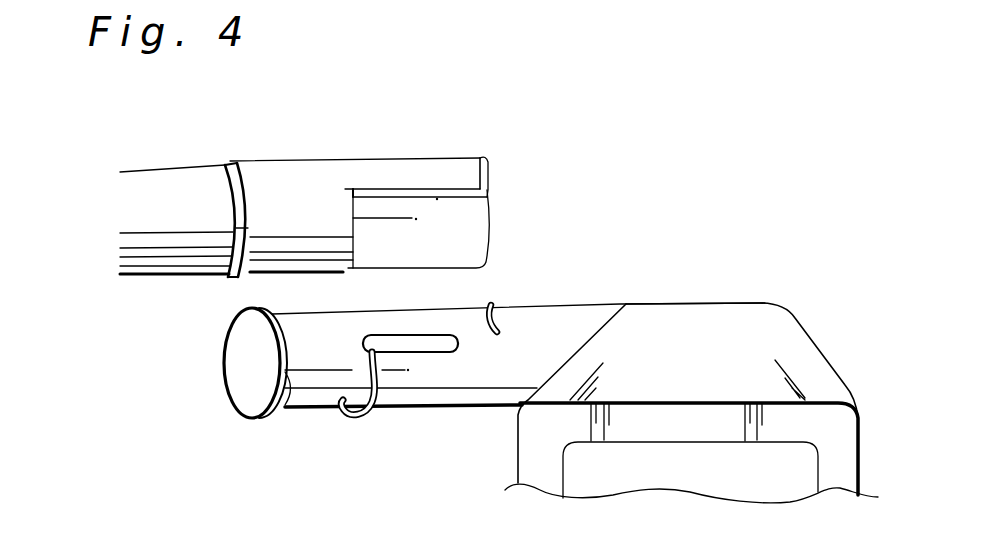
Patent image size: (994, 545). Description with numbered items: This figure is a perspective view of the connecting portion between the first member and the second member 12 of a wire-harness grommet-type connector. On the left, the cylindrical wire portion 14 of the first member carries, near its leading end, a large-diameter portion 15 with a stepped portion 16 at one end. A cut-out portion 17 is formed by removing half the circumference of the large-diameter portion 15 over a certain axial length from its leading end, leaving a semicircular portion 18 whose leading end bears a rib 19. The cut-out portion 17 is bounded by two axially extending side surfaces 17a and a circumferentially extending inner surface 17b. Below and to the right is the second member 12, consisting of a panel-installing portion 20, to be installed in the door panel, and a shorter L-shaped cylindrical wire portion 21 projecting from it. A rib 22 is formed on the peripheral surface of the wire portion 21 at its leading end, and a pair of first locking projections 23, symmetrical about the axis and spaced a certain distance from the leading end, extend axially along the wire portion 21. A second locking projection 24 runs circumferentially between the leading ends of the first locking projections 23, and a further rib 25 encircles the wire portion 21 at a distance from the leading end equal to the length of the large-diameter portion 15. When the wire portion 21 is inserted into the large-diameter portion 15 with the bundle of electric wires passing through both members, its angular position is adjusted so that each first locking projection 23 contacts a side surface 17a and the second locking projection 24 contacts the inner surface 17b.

The second member 12 is at (661, 302).
The wire portion 14 is at (152, 284).
The large-diameter portion 15 is at (297, 196).
The stepped portion 16 is at (238, 231).
The cut-out portion 17 is at (430, 266).
The side surfaces 17a is at (381, 190).
The inner surface 17b is at (353, 233).
The semicircular portion 18 is at (428, 180).
The rib 19 is at (493, 165).
The panel-installing portion 20 is at (690, 377).
The wire portion 21 is at (552, 333).
The rib 22 is at (286, 375).
The first locking projections 23 is at (419, 345).
The second locking projection 24 is at (343, 422).
The rib 25 is at (499, 301).